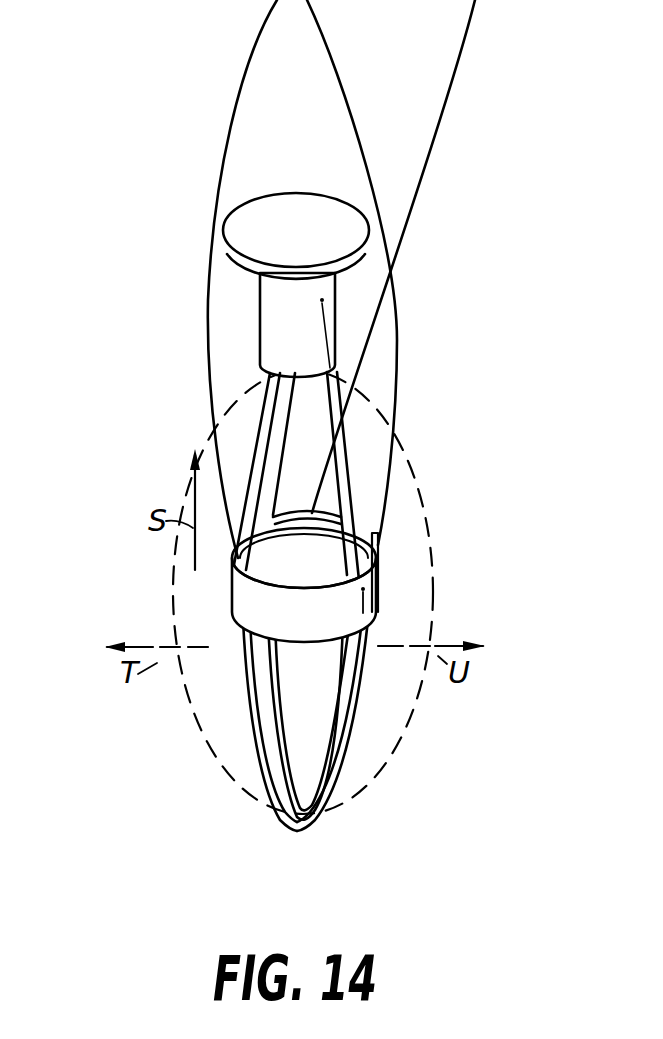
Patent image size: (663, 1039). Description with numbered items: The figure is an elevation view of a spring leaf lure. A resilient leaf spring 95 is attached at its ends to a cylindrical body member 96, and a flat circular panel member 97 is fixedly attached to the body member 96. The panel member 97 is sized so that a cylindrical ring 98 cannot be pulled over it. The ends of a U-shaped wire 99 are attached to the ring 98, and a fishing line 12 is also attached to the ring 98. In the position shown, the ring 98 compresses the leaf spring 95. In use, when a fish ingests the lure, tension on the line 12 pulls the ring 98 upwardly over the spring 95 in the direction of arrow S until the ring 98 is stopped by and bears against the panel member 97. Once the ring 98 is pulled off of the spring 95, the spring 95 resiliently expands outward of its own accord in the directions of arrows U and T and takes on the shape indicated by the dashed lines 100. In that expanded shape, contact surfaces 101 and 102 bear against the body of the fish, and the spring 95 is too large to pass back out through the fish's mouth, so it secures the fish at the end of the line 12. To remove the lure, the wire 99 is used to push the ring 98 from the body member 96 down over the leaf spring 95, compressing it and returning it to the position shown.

The fishing line 12 is at (433, 163).
The leaf spring 95 is at (350, 720).
The cylindrical body member 96 is at (314, 340).
The flat circular panel member 97 is at (317, 220).
The cylindrical ring 98 is at (383, 580).
The U-shaped wire 99 is at (227, 143).
The dashed lines 100 is at (437, 567).
The contact surface 101 is at (352, 685).
The contact surface 102 is at (247, 720).